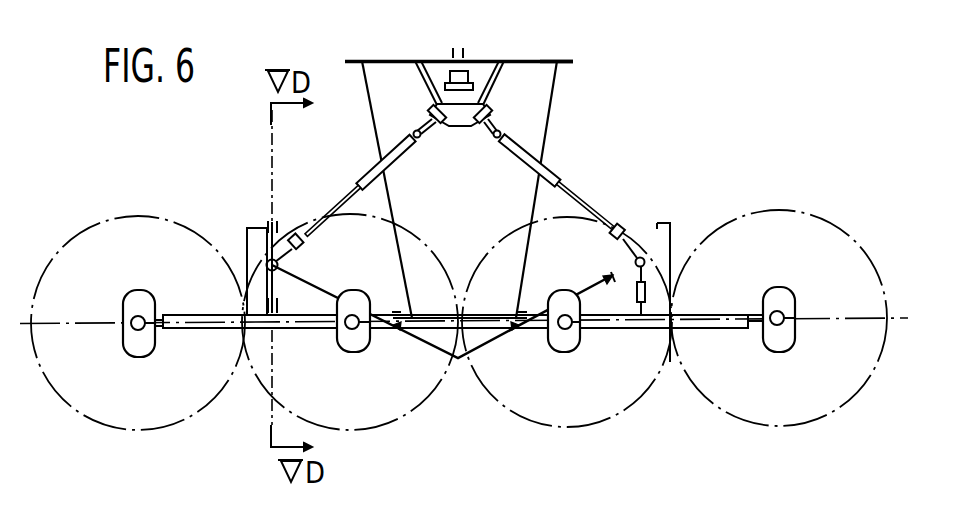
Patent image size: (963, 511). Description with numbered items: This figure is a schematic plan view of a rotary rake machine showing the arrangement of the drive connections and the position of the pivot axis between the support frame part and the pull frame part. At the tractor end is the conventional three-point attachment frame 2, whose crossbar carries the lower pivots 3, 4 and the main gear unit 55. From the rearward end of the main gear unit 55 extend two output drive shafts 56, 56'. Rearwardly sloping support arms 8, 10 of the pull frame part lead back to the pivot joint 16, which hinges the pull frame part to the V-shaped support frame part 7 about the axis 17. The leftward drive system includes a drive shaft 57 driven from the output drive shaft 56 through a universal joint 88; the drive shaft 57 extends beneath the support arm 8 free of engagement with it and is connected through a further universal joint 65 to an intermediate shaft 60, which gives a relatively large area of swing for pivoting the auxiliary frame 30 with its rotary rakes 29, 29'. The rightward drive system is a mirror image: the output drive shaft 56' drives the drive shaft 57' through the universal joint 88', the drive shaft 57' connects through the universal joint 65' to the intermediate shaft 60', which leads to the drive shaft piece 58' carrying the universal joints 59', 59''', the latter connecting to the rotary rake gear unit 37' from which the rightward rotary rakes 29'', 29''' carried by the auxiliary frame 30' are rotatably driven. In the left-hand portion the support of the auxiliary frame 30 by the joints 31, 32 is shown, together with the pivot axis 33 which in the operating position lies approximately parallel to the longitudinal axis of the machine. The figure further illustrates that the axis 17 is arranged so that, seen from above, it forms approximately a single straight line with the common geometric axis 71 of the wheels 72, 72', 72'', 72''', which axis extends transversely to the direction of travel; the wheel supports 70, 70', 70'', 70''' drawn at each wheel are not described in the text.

The three-point attachment frame 2 is at (471, 60).
The lower pivot 3 is at (353, 59).
The lower pivot 4 is at (566, 59).
The V-shaped support frame part 7 is at (462, 366).
The support arm 8 is at (364, 86).
The support arm 10 is at (552, 88).
The pivot joint 16 is at (393, 312).
The axis 17 is at (479, 312).
The rotary rake 29 is at (138, 342).
The rotary rake 29' is at (350, 340).
The rotary rake 29'' is at (567, 339).
The rotary rake 29''' is at (779, 336).
The auxiliary frame 30 is at (242, 240).
The auxiliary frame 30' is at (710, 292).
The joint 31 is at (275, 192).
The joint 32 is at (278, 340).
The pivot axis 33 is at (268, 288).
The rotary rake gear unit 37' is at (613, 341).
The main gear unit 55 is at (443, 98).
The output drive shaft 56 is at (412, 101).
The output drive shaft 56' is at (504, 102).
The drive shaft 57 is at (359, 176).
The drive shaft 57' is at (558, 176).
The drive shaft piece 58' is at (686, 288).
The universal joint 59' is at (682, 221).
The universal joint 59''' is at (675, 390).
The intermediate shaft 60 is at (317, 239).
The intermediate shaft 60' is at (633, 205).
The universal joint 65 is at (314, 202).
The universal joint 65' is at (630, 194).
The wheel support 70 is at (170, 373).
The wheel support 70' is at (378, 375).
The wheel support 70'' is at (540, 375).
The wheel support 70''' is at (754, 370).
The common geometric axis 71 is at (43, 293).
The wheel 72 is at (128, 294).
The wheel 72' is at (353, 298).
The wheel 72'' is at (572, 292).
The wheel 72''' is at (803, 301).
The universal joint 88 is at (426, 162).
The universal joint 88' is at (496, 162).